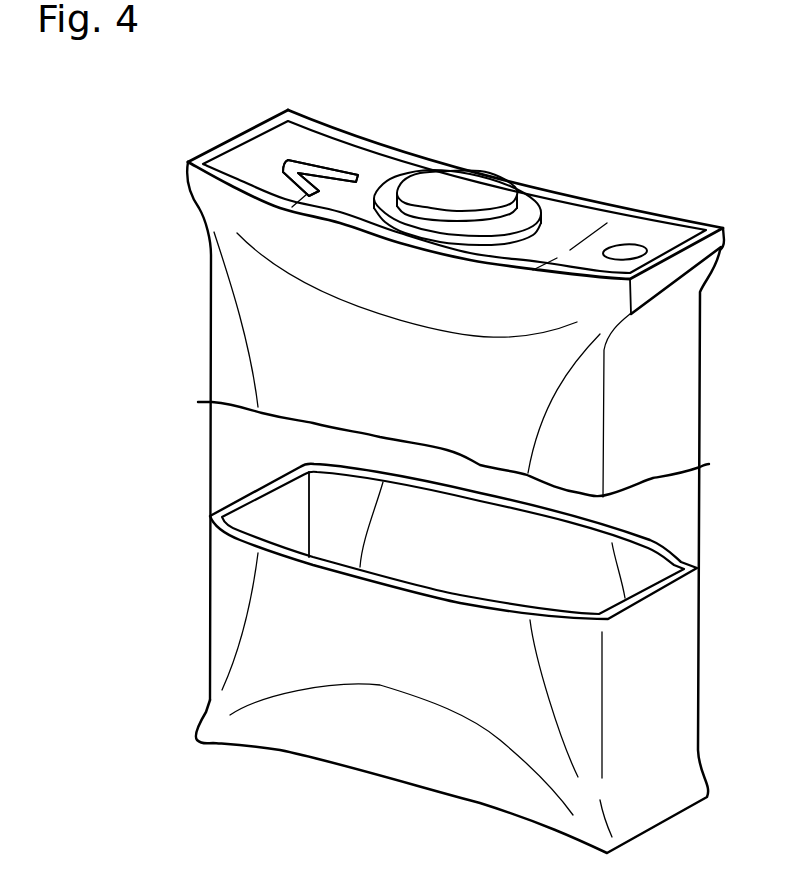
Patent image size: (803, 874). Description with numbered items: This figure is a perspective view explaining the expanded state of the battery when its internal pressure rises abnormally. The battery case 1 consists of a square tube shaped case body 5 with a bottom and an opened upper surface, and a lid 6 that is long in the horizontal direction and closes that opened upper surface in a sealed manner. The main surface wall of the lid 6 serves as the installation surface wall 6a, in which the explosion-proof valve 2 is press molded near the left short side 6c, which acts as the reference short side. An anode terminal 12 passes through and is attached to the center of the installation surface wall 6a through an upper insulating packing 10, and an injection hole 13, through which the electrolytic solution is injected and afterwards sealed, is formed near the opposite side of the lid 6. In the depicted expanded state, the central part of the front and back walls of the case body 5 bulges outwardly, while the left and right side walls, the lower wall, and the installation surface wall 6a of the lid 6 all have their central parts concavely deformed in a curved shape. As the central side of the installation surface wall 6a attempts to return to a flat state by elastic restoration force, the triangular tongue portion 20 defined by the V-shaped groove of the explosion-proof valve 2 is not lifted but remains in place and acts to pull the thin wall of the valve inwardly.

The battery case 1 is at (718, 340).
The explosion-proof valve 2 is at (307, 137).
The case body 5 is at (670, 390).
The lid 6 is at (573, 205).
The installation surface wall 6a is at (333, 202).
The left short side 6c is at (248, 137).
The upper insulating packing 10 is at (526, 208).
The anode terminal 12 is at (462, 184).
The injection hole 13 is at (636, 243).
The triangular tongue portion 20 is at (320, 170).